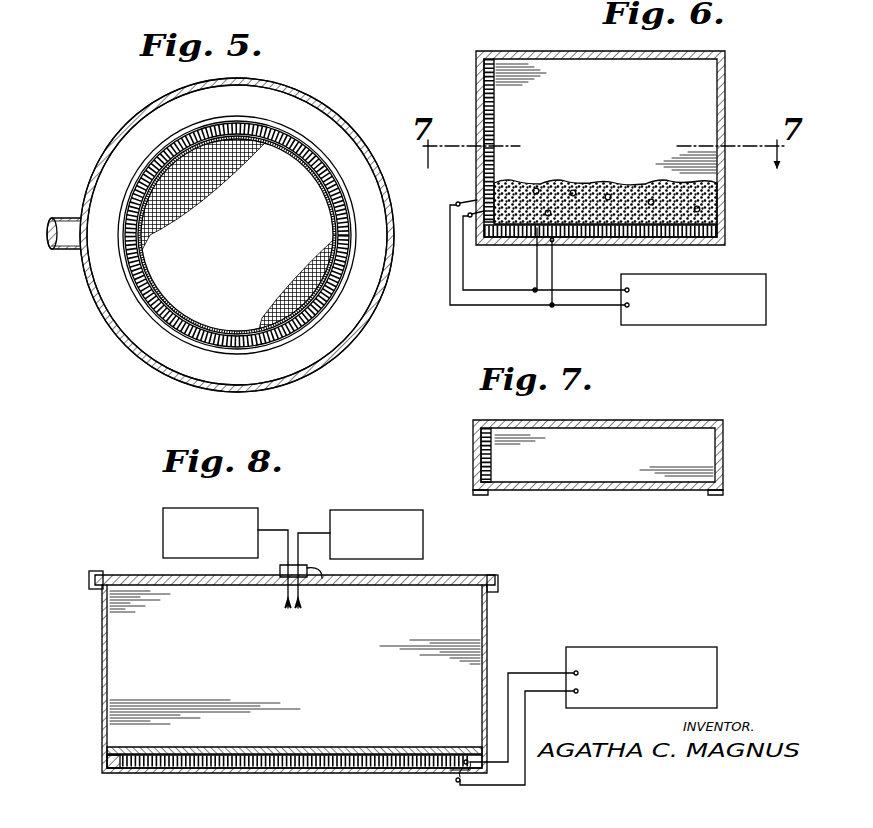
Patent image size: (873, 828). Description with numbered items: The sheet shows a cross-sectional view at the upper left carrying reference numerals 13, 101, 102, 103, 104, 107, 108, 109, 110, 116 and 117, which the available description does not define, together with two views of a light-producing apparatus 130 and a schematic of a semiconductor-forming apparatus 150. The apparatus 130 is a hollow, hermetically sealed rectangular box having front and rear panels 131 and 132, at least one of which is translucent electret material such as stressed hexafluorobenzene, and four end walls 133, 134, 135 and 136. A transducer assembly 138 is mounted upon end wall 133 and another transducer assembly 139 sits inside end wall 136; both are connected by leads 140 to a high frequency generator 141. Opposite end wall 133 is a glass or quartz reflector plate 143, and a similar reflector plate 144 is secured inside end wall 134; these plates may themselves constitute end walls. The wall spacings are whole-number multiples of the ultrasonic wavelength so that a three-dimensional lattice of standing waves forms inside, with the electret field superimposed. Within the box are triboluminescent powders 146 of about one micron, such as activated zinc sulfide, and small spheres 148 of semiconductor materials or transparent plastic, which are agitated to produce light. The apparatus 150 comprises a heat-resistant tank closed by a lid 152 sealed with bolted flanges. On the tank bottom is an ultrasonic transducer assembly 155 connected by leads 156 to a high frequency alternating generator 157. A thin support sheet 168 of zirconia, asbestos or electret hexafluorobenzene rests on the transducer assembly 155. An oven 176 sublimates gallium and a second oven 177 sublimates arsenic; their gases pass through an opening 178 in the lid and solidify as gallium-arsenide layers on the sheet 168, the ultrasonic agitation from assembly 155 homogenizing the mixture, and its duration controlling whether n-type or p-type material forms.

In FIG. 5, the electrode ring 13 is at (142, 156).
In FIG. 5, the outer casing ring 101 is at (137, 110).
In FIG. 5, the element 102 is at (222, 4).
In FIG. 5, the element 103 is at (115, 12).
In FIG. 5, the inlet pipe 104 is at (60, 218).
In FIG. 5, the intermediate wall 107 is at (318, 125).
In FIG. 5, the inner chamber material 108 is at (295, 198).
In FIG. 5, the inner liner 109 is at (167, 298).
In FIG. 5, the central cavity 110 is at (232, 225).
In FIG. 5, the element 116 is at (310, 8).
In FIG. 5, the element 117 is at (385, 8).
In FIG. 6, the apparatus 130 is at (735, 80).
In FIG. 7, the apparatus 130 is at (735, 435).
In FIG. 7, the front panel 131 is at (628, 488).
In FIG. 7, the rear panel 132 is at (682, 422).
In FIG. 6, the end wall 133 is at (476, 95).
In FIG. 7, the end wall 133 is at (473, 450).
In FIG. 6, the end wall 134 is at (574, 52).
In FIG. 6, the end wall 135 is at (724, 108).
In FIG. 7, the end wall 135 is at (724, 460).
In FIG. 6, the end wall 136 is at (577, 245).
In FIG. 6, the transducer assembly 138 is at (498, 135).
In FIG. 7, the transducer assembly 138 is at (500, 468).
In FIG. 6, the transducer assembly 139 is at (670, 222).
In FIG. 6, the leads 140 is at (575, 292).
In FIG. 6, the high frequency generator 141 is at (740, 325).
In FIG. 6, the reflector plate 143 is at (710, 131).
In FIG. 7, the reflector plate 143 is at (708, 461).
In FIG. 6, the reflector plate 144 is at (606, 62).
In FIG. 7, the reflector plate 144 is at (562, 433).
In FIG. 6, the triboluminescent powders 146 is at (605, 178).
In FIG. 6, the small spheres 148 is at (574, 190).
In FIG. 8, the apparatus 150 is at (502, 617).
In FIG. 8, the lid 152 is at (212, 586).
In FIG. 8, the ultrasonic transducer assembly 155 is at (336, 750).
In FIG. 8, the leads 156 is at (540, 690).
In FIG. 8, the high frequency alternating generator 157 is at (690, 657).
In FIG. 8, the support sheet 168 is at (222, 750).
In FIG. 8, the oven 176 is at (178, 508).
In FIG. 8, the oven 177 is at (358, 510).
In FIG. 8, the opening 178 is at (312, 568).